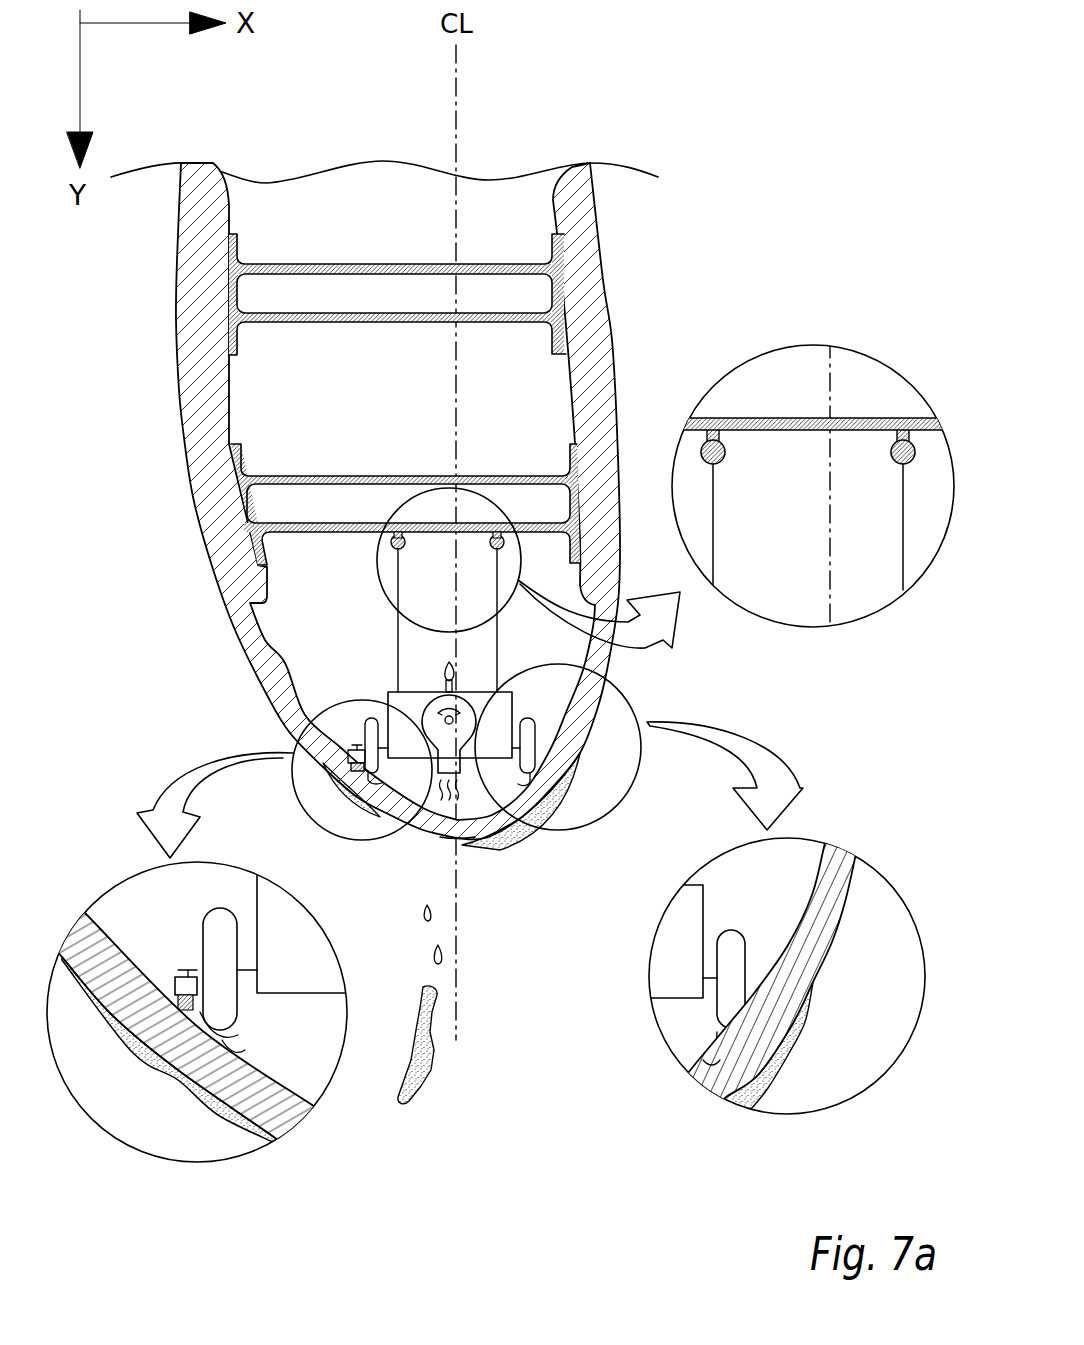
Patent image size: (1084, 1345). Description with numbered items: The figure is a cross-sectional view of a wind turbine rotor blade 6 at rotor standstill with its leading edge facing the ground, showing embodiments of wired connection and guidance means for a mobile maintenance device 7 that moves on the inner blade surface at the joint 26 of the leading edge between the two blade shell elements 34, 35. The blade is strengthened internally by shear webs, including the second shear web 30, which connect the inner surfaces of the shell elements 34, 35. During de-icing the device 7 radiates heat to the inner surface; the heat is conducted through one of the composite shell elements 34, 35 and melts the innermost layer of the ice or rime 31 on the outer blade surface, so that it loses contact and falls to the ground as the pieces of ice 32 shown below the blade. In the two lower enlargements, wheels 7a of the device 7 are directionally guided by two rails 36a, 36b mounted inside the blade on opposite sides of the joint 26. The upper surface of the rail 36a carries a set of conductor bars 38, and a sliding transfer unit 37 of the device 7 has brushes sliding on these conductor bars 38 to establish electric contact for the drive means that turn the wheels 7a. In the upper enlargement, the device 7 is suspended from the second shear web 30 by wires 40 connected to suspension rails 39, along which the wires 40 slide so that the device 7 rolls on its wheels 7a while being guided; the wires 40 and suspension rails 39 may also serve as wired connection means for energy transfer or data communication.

The rotor blade 6 is at (643, 273).
The mobile maintenance device 7 is at (257, 877).
The wheels 7a is at (213, 908).
The joint of the leading edge 26 is at (460, 840).
The second shear web 30 is at (690, 417).
The ice or rime 31 is at (275, 1142).
The pieces of ice 32 is at (417, 1093).
The blade shell element 34 is at (309, 1112).
The blade shell element 35 is at (833, 847).
The rail 36a is at (232, 1060).
The rail 36b is at (717, 1050).
The sliding transfer unit 37 is at (175, 977).
The conductor bars 38 is at (175, 1077).
The suspension rails 39 is at (738, 443).
The wires 40 is at (715, 538).